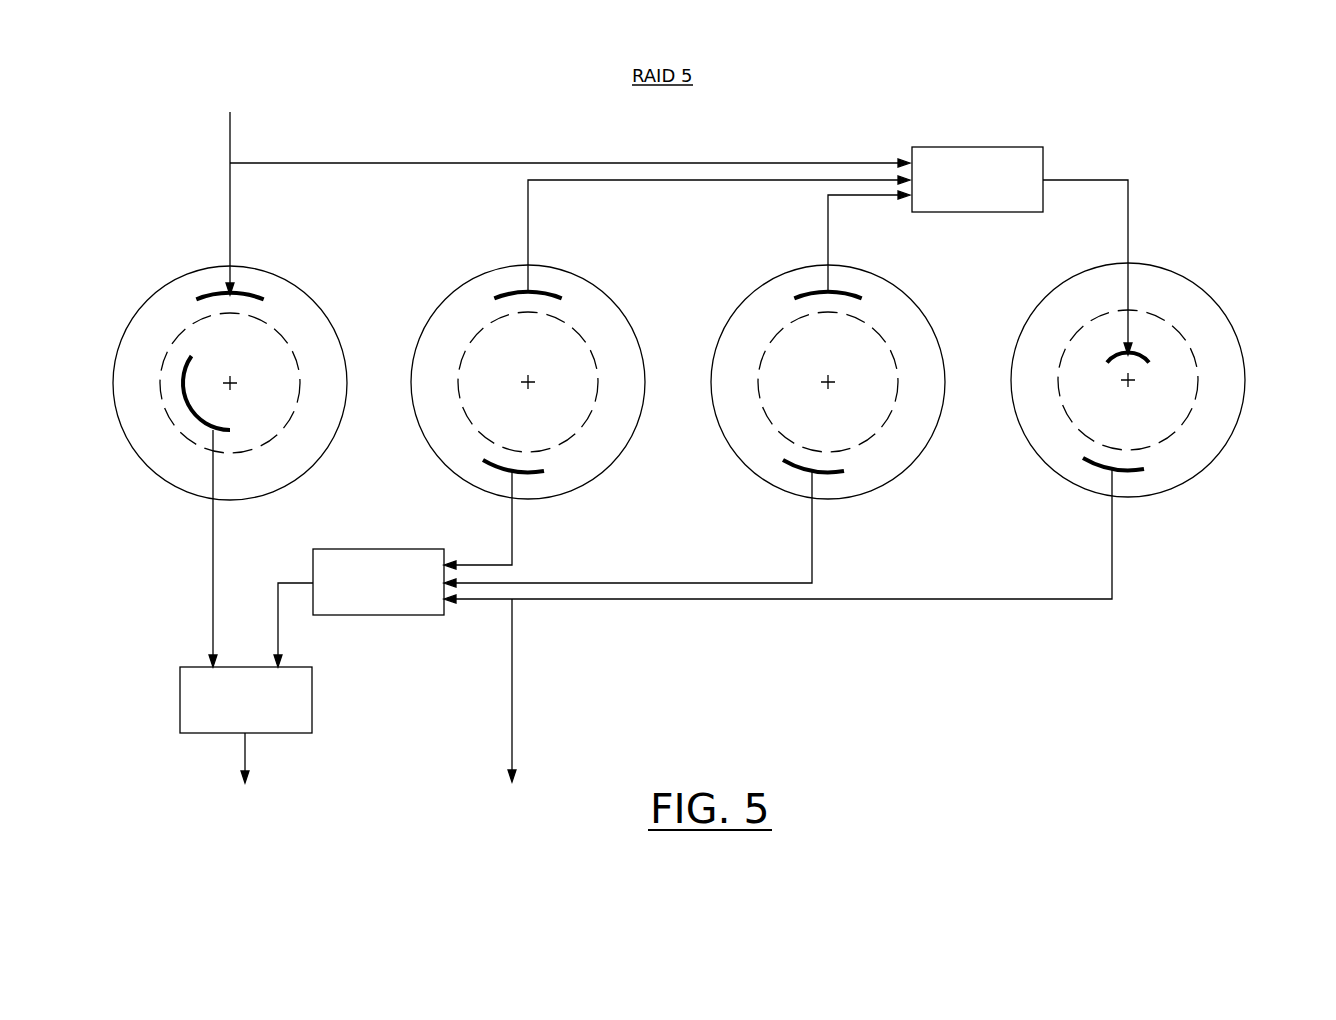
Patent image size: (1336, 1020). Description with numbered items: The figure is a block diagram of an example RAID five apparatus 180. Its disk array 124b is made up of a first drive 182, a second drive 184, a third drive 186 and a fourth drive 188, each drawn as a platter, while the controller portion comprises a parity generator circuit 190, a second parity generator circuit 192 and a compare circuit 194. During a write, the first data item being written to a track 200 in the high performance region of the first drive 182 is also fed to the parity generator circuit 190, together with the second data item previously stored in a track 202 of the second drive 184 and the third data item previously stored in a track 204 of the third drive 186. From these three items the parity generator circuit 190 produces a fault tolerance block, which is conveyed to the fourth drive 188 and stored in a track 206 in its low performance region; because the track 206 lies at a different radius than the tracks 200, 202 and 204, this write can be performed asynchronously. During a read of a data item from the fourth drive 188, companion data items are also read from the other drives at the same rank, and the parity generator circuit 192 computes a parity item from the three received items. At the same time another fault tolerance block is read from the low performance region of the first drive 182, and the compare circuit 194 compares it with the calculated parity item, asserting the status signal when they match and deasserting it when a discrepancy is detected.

The RAID 5 apparatus 180 is at (172, 70).
The first drive 182 is at (162, 283).
The second drive 184 is at (459, 283).
The third drive 186 is at (759, 283).
The fourth drive 188 is at (1059, 283).
The parity generator circuit 190 is at (944, 146).
The parity generator circuit 192 is at (354, 549).
The compare circuit 194 is at (196, 667).
The track 200 is at (260, 300).
The track 202 is at (558, 300).
The track 204 is at (858, 300).
The track 206 is at (1175, 317).
The disk array 124b is at (1167, 366).